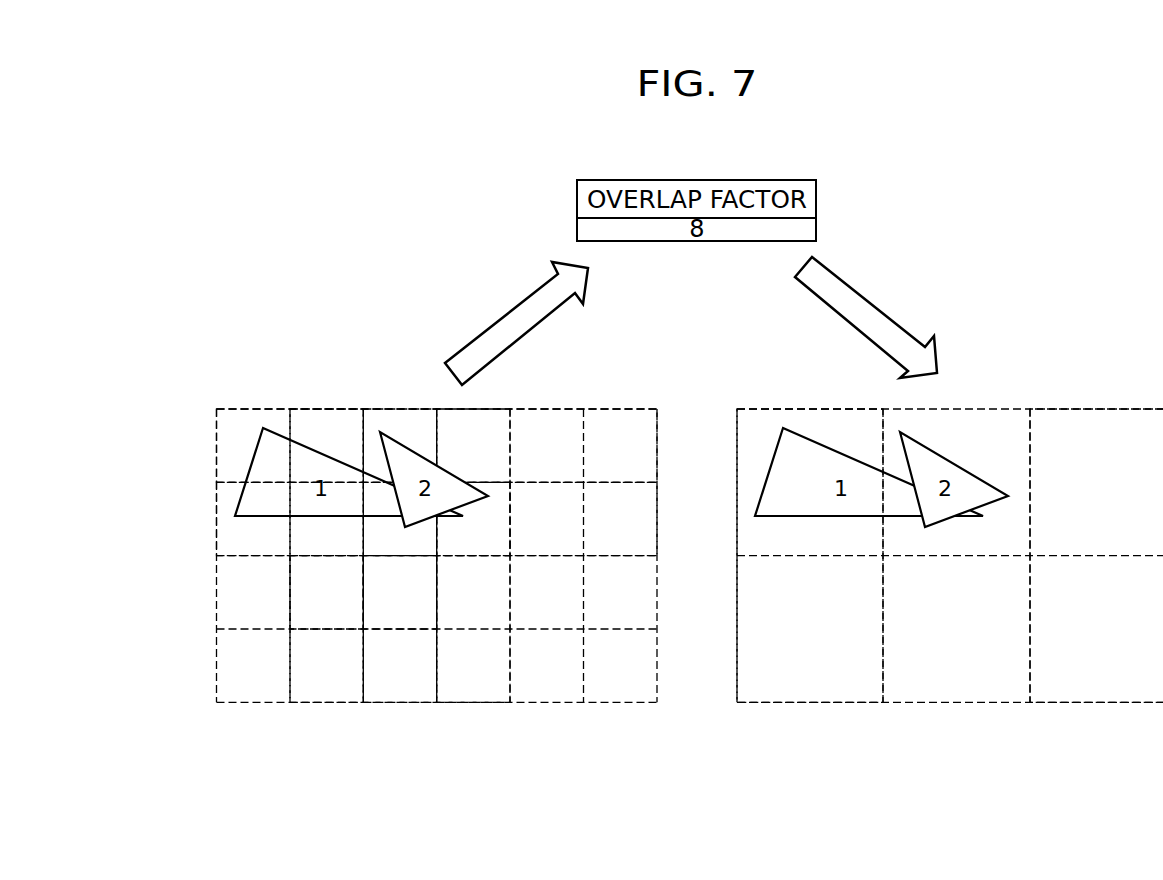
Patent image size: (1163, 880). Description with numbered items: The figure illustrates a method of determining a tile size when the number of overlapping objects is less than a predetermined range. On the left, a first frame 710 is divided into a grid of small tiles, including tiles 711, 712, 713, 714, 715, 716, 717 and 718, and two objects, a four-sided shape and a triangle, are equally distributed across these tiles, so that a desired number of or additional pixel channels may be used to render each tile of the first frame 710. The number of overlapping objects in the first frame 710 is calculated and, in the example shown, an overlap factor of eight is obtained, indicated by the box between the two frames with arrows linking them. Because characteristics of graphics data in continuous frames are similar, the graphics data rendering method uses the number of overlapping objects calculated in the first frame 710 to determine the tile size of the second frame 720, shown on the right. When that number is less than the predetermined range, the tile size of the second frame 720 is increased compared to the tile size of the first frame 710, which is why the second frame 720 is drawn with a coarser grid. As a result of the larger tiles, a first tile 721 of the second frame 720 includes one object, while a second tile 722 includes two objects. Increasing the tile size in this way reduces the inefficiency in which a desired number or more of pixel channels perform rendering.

The first frame 710 is at (228, 668).
The tile 711 is at (228, 443).
The tile 712 is at (328, 421).
The tile 713 is at (400, 421).
The tile 714 is at (492, 418).
The tile 715 is at (228, 520).
The tile 716 is at (328, 545).
The tile 717 is at (400, 545).
The tile 718 is at (498, 515).
The second frame 720 is at (748, 650).
The first tile 721 is at (758, 421).
The second tile 722 is at (1007, 421).